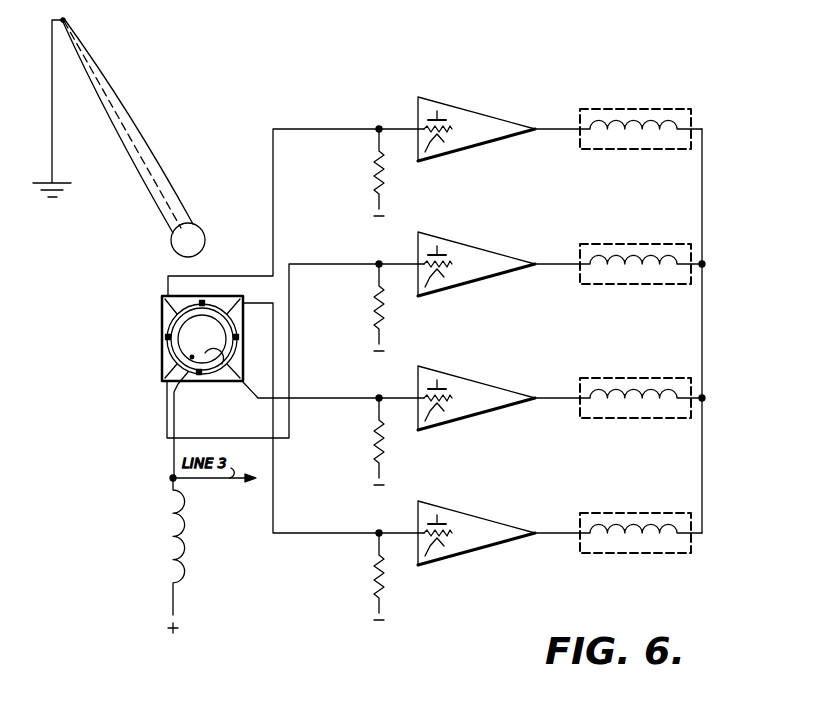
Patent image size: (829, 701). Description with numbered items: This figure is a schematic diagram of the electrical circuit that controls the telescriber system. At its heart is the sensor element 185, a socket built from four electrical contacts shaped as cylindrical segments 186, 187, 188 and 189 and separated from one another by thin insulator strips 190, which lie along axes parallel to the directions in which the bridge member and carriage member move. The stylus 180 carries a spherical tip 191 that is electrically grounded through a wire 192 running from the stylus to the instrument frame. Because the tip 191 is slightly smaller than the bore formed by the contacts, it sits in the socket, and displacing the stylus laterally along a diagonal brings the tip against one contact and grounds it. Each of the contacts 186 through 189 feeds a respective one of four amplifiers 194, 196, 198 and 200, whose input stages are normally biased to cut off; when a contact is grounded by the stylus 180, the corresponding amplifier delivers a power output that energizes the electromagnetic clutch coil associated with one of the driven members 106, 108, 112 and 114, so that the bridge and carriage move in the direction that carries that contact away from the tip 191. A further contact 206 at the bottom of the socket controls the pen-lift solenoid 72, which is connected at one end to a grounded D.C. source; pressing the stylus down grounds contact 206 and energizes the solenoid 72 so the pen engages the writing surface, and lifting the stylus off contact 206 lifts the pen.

The pen-lift solenoid 72 is at (186, 542).
The driven member 106 is at (624, 109).
The driven member 108 is at (624, 378).
The driven member 112 is at (624, 513).
The driven member 114 is at (624, 244).
The stylus 180 is at (137, 118).
The sensor element 185 is at (163, 342).
The cylindrical segment contact 186 is at (192, 306).
The cylindrical segment contact 187 is at (215, 302).
The cylindrical segment contact 188 is at (208, 380).
The cylindrical segment contact 189 is at (173, 357).
The insulator strips 190 is at (187, 323).
The spherical tip 191 is at (201, 233).
The wire 192 is at (52, 100).
The amplifier 194 is at (471, 110).
The amplifier 196 is at (471, 245).
The amplifier 198 is at (471, 379).
The amplifier 200 is at (471, 514).
The contact 206 is at (187, 338).